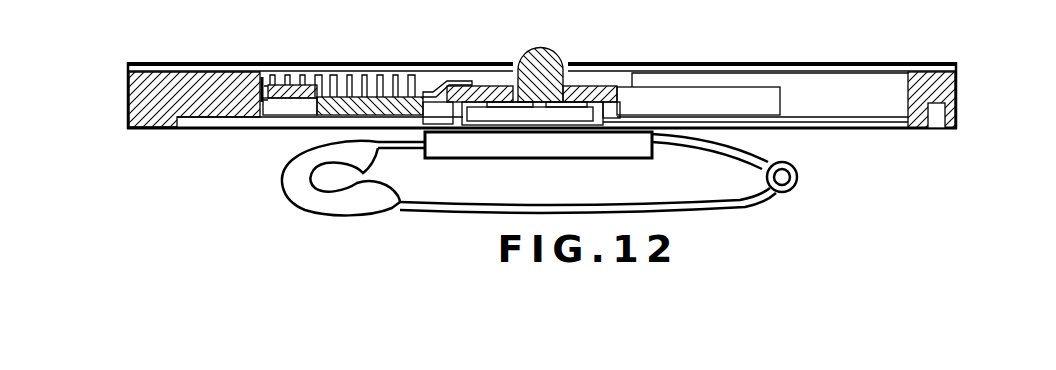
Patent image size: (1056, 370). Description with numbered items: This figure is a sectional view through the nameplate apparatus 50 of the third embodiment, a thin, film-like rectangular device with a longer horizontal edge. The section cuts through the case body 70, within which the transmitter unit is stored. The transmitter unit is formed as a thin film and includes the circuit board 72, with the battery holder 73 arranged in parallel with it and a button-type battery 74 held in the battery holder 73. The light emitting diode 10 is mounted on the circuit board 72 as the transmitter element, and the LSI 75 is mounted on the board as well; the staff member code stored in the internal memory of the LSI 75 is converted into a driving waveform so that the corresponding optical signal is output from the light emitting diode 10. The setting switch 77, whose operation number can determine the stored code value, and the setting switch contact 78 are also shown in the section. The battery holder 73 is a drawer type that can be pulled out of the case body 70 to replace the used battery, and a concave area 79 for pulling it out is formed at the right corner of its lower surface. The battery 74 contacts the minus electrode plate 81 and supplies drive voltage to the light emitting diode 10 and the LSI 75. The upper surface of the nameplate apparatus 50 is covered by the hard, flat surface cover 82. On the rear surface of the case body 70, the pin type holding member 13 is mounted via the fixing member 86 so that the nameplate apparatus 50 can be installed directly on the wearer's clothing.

The nameplate apparatus 50 is at (432, 30).
The light emitting diode 10 is at (558, 54).
The pin type holding member 13 is at (439, 213).
The case body 70 is at (207, 131).
The circuit board 72 is at (489, 87).
The battery holder 73 is at (951, 89).
The battery 74 is at (856, 90).
The LSI 75 is at (328, 108).
The setting switch 77 is at (128, 112).
The setting switch contact 78 is at (262, 84).
The concave area 79 is at (936, 130).
The minus electrode plate 81 is at (664, 92).
The surface cover 82 is at (748, 64).
The fixing member 86 is at (576, 150).